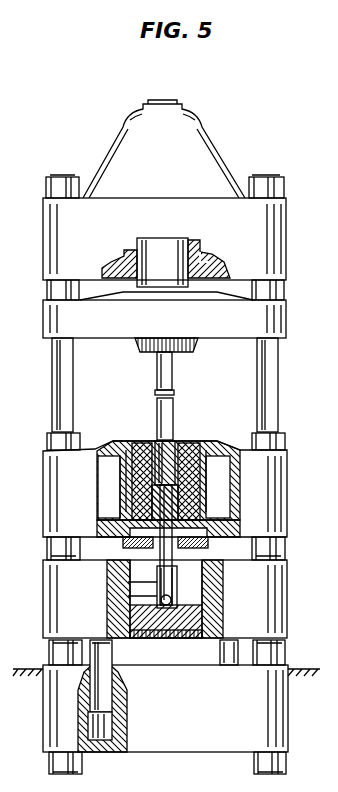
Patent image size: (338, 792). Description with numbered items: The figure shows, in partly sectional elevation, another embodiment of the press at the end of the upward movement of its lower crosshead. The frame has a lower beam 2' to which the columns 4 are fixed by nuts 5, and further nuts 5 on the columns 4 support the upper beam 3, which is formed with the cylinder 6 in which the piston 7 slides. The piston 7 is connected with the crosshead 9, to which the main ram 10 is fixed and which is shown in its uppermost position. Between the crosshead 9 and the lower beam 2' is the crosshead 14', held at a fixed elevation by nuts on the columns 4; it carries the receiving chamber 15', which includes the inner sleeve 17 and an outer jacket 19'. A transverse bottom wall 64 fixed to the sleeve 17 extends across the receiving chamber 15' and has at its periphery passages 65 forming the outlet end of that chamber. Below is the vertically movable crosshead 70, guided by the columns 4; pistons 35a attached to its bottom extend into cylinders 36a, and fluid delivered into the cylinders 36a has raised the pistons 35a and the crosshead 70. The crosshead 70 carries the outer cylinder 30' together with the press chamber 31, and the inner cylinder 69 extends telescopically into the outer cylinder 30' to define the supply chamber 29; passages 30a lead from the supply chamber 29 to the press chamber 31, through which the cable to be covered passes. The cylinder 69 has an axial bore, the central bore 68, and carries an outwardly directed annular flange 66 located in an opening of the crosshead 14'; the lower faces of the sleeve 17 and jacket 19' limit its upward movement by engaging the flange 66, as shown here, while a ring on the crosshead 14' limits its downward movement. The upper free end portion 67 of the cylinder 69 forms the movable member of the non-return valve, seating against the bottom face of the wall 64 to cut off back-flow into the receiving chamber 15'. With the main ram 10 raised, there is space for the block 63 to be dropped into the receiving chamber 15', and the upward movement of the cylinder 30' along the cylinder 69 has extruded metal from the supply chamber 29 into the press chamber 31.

The lower beam 2' is at (166, 708).
The upper beam 3 is at (262, 226).
The columns 4 is at (62, 362).
The nuts 5 is at (272, 760).
The cylinder 6 is at (205, 254).
The piston 7 is at (156, 252).
The crosshead 9 is at (268, 318).
The main ram 10 is at (158, 375).
The crosshead 14' is at (182, 489).
The receiving chamber 15' is at (181, 504).
The inner sleeve 17 is at (195, 447).
The outer jacket 19' is at (100, 487).
The supply chamber 29 is at (178, 590).
The outer cylinder 30' is at (196, 582).
The passages 30a is at (130, 600).
The press chamber 31 is at (164, 606).
The pistons 35a is at (100, 688).
The cylinders 36a is at (106, 722).
The block 63 is at (158, 413).
The bottom wall 64 is at (205, 470).
The passages 65 is at (126, 498).
The annular flange 66 is at (126, 540).
The upper free end portion 67 is at (196, 509).
The central bore 68 is at (176, 552).
The inner cylinder 69 is at (160, 592).
The crosshead 70 is at (272, 600).